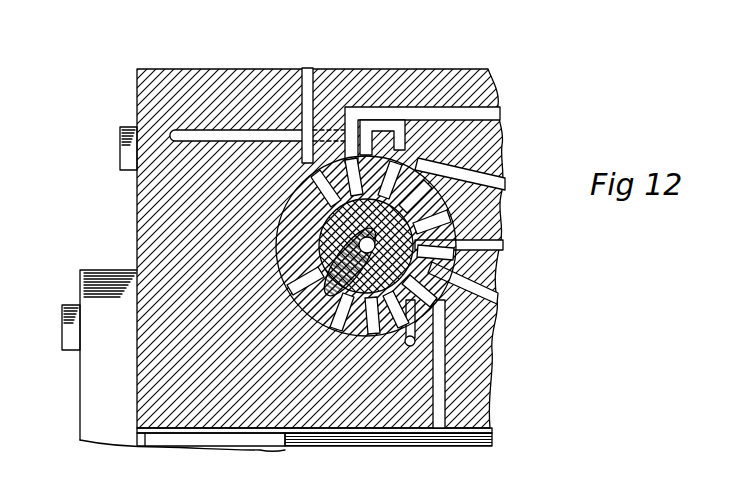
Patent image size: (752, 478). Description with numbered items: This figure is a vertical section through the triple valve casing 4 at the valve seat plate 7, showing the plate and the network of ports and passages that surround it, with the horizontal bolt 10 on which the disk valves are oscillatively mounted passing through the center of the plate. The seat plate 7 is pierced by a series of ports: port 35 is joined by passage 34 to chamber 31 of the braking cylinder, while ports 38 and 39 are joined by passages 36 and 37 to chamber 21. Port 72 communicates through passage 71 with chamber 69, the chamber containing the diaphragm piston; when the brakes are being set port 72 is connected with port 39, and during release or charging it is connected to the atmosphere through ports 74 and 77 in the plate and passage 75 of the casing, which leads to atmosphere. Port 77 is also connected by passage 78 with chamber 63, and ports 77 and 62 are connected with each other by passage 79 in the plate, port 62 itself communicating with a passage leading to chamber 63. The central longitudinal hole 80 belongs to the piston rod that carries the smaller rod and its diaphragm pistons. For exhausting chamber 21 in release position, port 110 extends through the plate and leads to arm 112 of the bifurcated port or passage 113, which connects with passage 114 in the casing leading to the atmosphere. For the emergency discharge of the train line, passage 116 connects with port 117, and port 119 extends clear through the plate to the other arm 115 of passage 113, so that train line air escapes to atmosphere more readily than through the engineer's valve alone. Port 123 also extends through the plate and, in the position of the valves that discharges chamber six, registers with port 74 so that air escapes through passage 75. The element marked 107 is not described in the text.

The triple valve casing 4 is at (263, 69).
The valve seat plate 7 is at (290, 250).
The horizontal bolt 10 is at (285, 272).
The chamber 21 is at (506, 245).
The chamber 31 is at (497, 316).
The passage 34 is at (494, 305).
The port 35 is at (498, 290).
The passage 36 is at (505, 230).
The passage 37 is at (500, 166).
The port 38 is at (503, 250).
The port 39 is at (498, 132).
The port 62 is at (366, 246).
The chamber 63 is at (497, 100).
The chamber 69 is at (182, 136).
The passage 71 is at (202, 130).
The port 72 is at (372, 160).
The port 74 is at (312, 182).
The passage 75 is at (305, 69).
The port 77 is at (352, 176).
The passage 78 is at (472, 100).
The passage 79 is at (278, 258).
The central longitudinal hole 80 is at (330, 446).
The gasket 107 is at (160, 447).
The port 110 is at (320, 300).
The arm 112 is at (355, 318).
The bifurcated port or passage 113 is at (445, 338).
The passage 114 is at (464, 383).
The arm 115 is at (308, 450).
The passage 116 is at (418, 340).
The port 117 is at (455, 332).
The port 119 is at (232, 428).
The port 123 is at (300, 196).